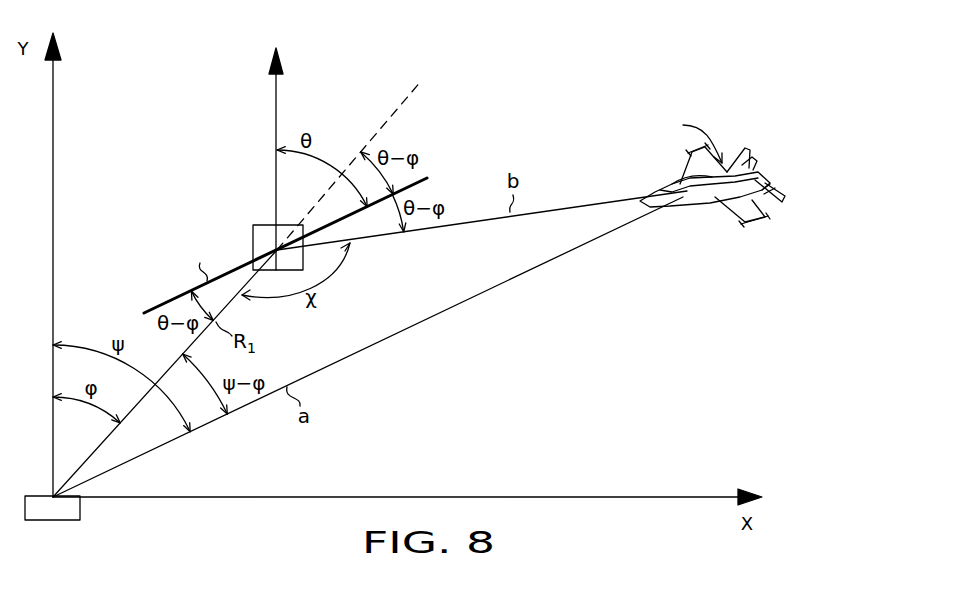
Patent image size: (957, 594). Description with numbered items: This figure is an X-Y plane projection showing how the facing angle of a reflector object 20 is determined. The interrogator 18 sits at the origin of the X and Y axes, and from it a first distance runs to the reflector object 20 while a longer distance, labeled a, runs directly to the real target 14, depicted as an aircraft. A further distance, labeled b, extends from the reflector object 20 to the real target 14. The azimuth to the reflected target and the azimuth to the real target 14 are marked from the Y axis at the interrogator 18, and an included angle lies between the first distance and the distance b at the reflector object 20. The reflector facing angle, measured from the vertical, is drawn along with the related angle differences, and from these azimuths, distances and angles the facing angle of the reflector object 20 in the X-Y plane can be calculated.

The real target 14 is at (740, 117).
The interrogator 18 is at (70, 520).
The reflector object 20 is at (252, 232).